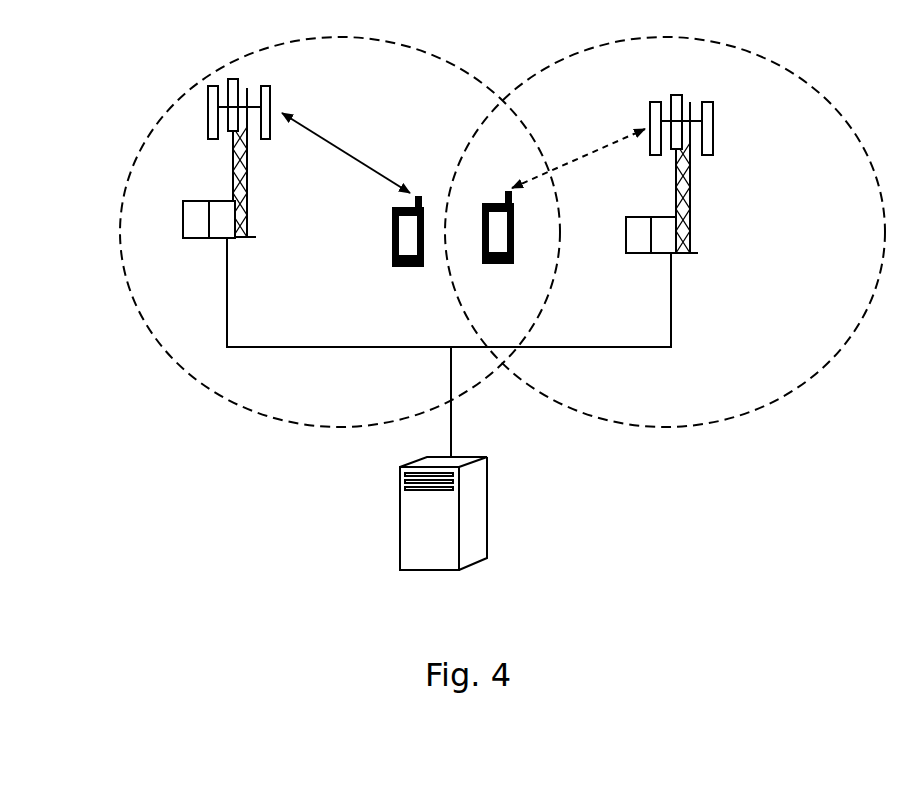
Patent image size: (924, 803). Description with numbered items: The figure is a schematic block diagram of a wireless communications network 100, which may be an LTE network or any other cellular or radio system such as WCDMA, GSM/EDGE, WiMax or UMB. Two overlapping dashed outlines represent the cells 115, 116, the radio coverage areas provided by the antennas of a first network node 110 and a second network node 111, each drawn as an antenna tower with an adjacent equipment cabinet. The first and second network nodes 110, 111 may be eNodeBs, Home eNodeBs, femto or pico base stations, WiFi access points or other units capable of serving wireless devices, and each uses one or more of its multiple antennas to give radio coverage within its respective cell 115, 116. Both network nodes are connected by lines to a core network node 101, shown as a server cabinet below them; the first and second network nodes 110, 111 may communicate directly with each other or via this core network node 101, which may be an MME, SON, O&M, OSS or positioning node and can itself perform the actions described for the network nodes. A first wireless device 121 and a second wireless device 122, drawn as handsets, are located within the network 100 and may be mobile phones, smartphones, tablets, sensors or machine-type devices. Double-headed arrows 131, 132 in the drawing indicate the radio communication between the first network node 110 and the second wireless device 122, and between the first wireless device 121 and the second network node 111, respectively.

The wireless communications network 100 is at (765, 466).
The core network node 101 is at (488, 547).
The first network node 110 is at (270, 92).
The second network node 111 is at (708, 105).
The cell 115 is at (142, 322).
The cell 116 is at (855, 325).
The first wireless device 121 is at (483, 263).
The second wireless device 122 is at (423, 266).
The first wireless link 131 is at (340, 152).
The second wireless link 132 is at (624, 134).